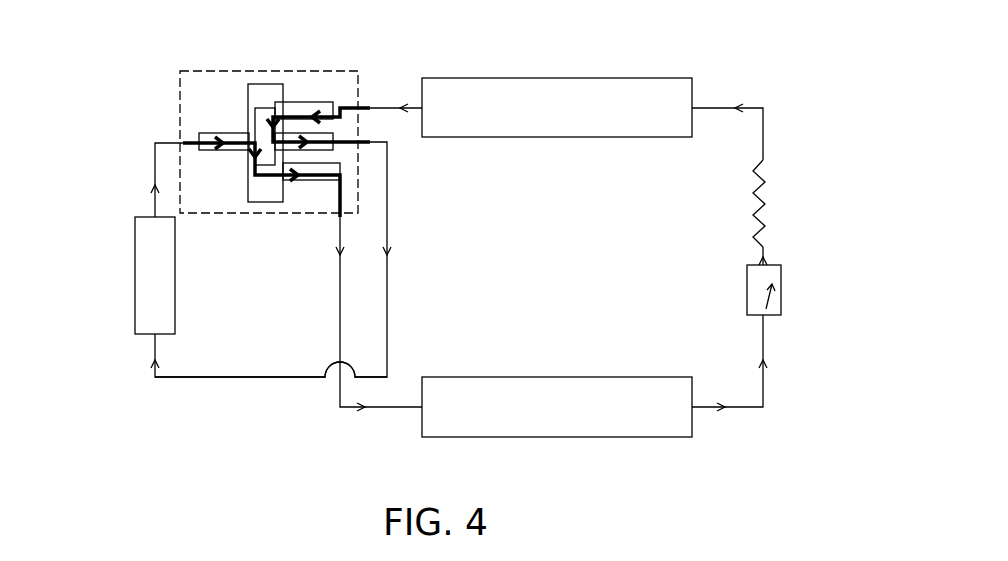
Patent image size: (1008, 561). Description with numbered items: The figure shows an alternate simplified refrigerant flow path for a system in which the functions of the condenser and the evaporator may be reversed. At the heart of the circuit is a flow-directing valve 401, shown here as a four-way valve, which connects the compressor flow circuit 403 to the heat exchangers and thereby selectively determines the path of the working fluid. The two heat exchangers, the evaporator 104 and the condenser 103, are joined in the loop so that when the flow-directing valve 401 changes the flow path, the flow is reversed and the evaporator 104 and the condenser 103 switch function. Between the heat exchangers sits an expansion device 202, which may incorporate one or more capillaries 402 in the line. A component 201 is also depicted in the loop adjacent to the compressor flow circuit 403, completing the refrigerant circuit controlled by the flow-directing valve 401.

The evaporator 104 is at (570, 78).
The condenser 103 is at (588, 437).
The compressor 201 is at (133, 276).
The expansion device 202 is at (782, 290).
The flow-directing valve 401 is at (265, 80).
The capillary 402 is at (760, 203).
The compressor flow circuit 403 is at (238, 378).